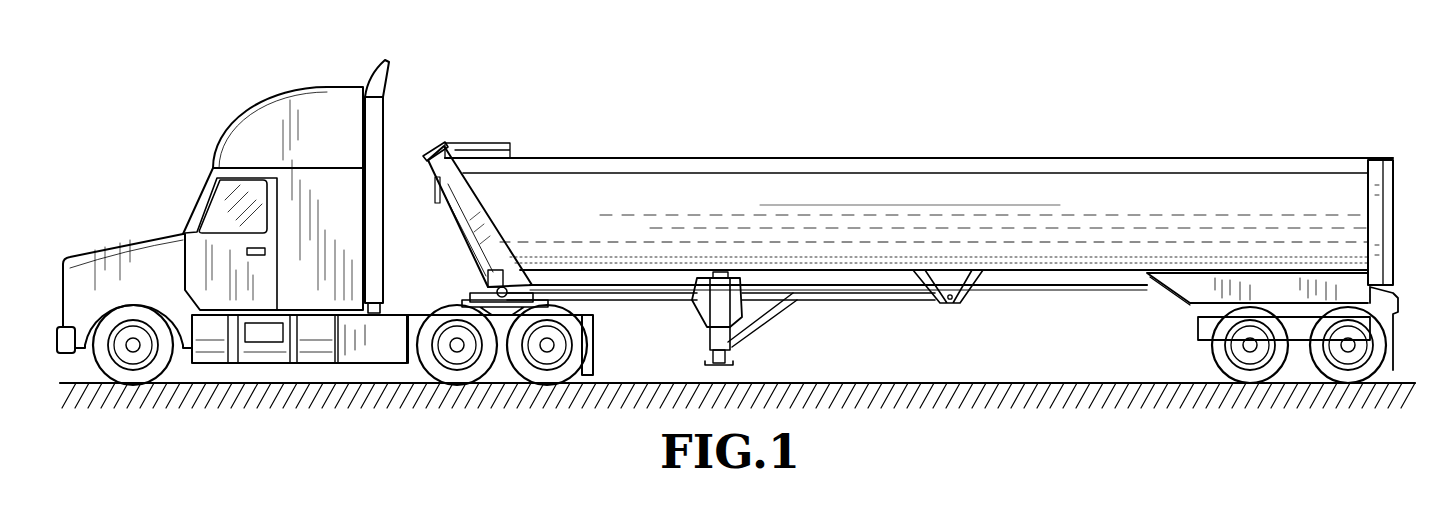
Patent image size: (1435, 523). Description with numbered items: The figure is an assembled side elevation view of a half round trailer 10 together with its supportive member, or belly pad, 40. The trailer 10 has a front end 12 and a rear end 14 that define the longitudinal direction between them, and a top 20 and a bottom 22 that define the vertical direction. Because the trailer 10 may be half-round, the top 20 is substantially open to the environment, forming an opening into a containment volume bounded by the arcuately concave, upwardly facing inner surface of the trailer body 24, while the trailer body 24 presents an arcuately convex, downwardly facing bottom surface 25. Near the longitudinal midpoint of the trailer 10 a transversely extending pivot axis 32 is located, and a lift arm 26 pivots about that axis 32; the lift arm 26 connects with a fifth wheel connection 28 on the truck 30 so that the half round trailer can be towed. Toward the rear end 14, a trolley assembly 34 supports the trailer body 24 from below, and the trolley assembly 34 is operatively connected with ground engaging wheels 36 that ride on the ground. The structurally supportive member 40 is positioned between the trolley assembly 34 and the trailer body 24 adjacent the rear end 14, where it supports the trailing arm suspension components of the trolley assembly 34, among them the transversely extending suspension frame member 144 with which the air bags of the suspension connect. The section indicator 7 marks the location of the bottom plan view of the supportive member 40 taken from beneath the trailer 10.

The half round trailer 10 is at (686, 108).
The front end 12 is at (417, 133).
The rear end 14 is at (1406, 135).
The top 20 is at (915, 260).
The bottom 22 is at (1292, 395).
The trailer body 24 is at (919, 196).
The bottom surface 25 is at (1066, 212).
The lift arm 26 is at (837, 303).
The fifth wheel connection 28 is at (505, 286).
The truck 30 is at (188, 194).
The pivot axis 32 is at (950, 304).
The trolley assembly 34 is at (1286, 288).
The ground engaging wheels 36 is at (1247, 378).
The supportive member 40 is at (1226, 268).
The suspension frame member 144 is at (1176, 291).
The section line 7- 7 is at (1192, 377).